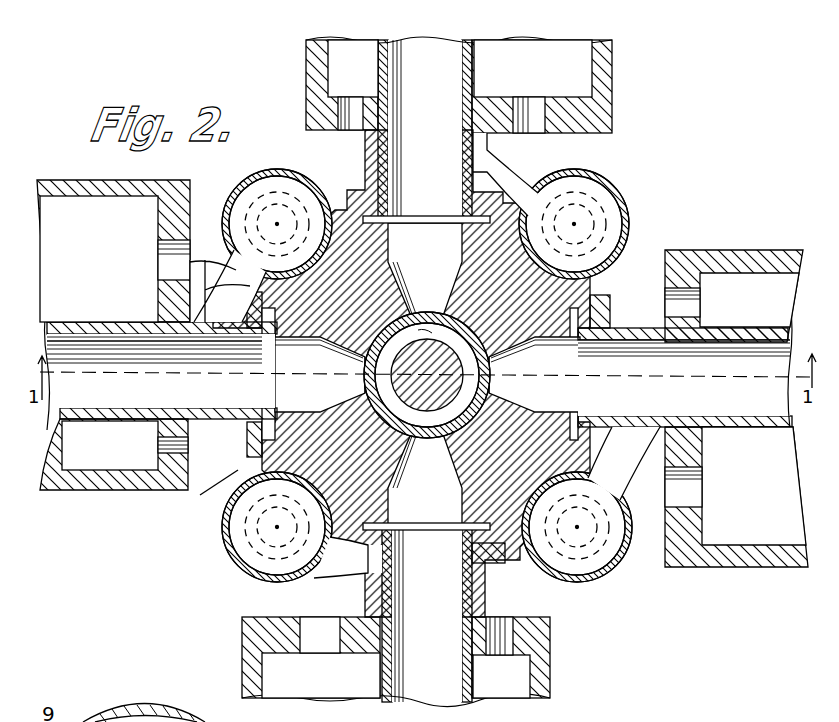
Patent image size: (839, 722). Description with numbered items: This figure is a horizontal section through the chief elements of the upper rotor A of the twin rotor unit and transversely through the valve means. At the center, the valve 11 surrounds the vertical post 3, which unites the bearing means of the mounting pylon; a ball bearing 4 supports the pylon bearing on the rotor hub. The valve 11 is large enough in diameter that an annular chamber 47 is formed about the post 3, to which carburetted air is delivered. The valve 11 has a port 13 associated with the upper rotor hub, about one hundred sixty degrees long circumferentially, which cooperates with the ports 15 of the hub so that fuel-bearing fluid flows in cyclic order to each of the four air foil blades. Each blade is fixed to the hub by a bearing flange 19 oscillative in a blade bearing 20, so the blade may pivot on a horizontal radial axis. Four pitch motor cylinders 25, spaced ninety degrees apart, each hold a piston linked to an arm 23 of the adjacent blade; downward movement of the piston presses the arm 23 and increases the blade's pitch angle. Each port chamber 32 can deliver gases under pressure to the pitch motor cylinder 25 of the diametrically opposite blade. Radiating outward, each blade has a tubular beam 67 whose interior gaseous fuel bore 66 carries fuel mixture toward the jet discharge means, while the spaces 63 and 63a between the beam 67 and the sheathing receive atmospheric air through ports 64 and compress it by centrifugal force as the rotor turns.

The vertical post 3 is at (425, 337).
The ball bearing 4 is at (238, 181).
The valve 11 is at (437, 314).
The port 13 is at (455, 300).
The ports 15 is at (358, 383).
The bearing flanges 19 is at (262, 445).
The blade bearing 20 is at (247, 437).
The arm 23 is at (520, 176).
The pitch motor cylinders 25 is at (282, 160).
The port chamber 32 is at (290, 387).
The annular chamber 47 is at (463, 383).
The space 63 is at (352, 58).
The space 63a is at (222, 652).
The ports 64 is at (350, 110).
The gaseous fuel bore 66 is at (419, 372).
The tubular beam 67 is at (462, 88).
The upper rotor A is at (207, 493).